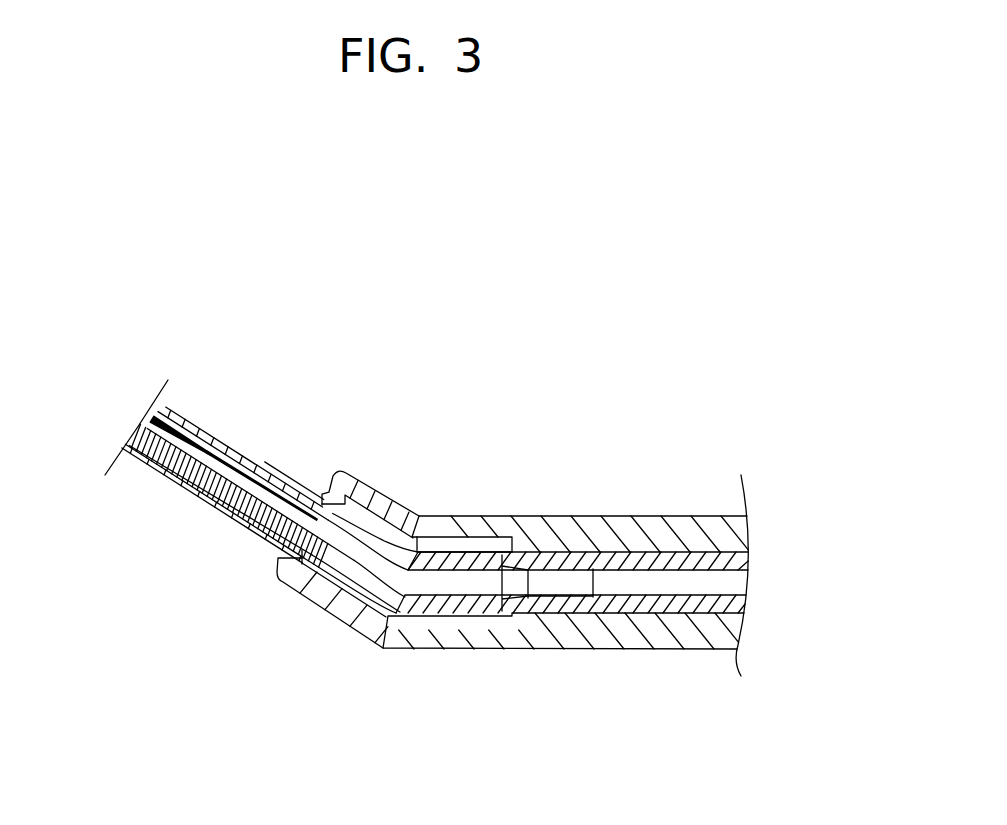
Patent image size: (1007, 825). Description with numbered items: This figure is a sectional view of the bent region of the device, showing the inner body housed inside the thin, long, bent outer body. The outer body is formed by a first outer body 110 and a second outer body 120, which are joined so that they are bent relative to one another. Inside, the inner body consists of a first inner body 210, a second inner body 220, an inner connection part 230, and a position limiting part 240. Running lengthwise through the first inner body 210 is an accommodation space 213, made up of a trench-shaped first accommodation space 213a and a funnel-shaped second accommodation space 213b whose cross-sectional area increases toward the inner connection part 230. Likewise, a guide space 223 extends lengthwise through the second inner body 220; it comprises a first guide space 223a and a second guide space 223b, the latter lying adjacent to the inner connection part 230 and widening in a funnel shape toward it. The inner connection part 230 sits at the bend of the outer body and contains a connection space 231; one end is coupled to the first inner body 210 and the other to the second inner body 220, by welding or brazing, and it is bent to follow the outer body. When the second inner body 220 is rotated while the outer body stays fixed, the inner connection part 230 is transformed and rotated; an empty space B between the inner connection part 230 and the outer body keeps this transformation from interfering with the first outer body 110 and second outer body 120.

The first outer body 110 is at (345, 482).
The second outer body 120 is at (593, 525).
The first inner body 210 is at (147, 452).
The accommodation space 213 is at (254, 526).
The first accommodation space 213a is at (257, 483).
The second accommodation space 213b is at (309, 526).
The second inner body 220 is at (680, 556).
The guide space 223 is at (630, 660).
The first guide space 223a is at (662, 583).
The second guide space 223b is at (556, 583).
The inner connection part 230 is at (353, 590).
The connection space 231 is at (423, 583).
The position limiting part 240 is at (248, 418).
The empty space B is at (473, 541).